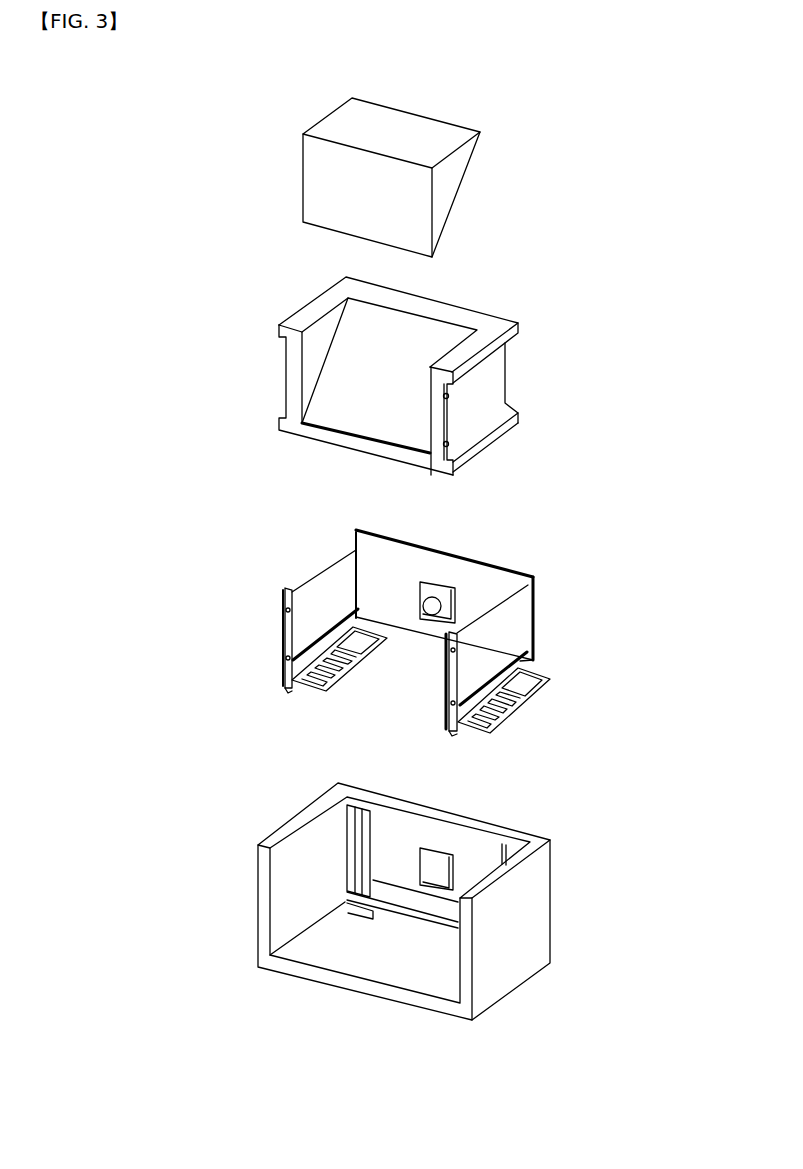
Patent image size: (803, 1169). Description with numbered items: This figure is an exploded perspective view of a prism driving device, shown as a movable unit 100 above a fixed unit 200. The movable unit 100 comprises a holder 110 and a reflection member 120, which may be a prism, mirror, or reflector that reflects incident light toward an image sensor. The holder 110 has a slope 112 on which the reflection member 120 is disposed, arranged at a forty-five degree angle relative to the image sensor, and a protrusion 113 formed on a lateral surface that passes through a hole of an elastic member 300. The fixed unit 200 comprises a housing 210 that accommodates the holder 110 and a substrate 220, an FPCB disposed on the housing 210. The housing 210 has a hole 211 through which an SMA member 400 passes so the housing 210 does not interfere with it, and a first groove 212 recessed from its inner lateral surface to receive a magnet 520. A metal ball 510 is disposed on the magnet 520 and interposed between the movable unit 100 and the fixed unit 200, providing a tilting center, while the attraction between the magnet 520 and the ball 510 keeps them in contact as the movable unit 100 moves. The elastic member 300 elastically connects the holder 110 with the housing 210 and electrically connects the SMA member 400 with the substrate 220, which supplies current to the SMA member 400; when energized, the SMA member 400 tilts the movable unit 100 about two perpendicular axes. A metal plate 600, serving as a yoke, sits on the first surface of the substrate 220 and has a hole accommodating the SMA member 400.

The movable unit 100 is at (610, 194).
The holder 110 is at (497, 372).
The slope 112 is at (358, 367).
The protrusion 113 is at (448, 396).
The reflection member 120 is at (452, 187).
The fixed unit 200 is at (665, 770).
The housing 210 is at (545, 877).
The hole 211 is at (365, 832).
The first groove 212 is at (434, 866).
The substrate 220 is at (537, 576).
The elastic member 300 is at (437, 680).
The SMA member 400 is at (287, 660).
The ball 510 is at (431, 597).
The magnet 520 is at (452, 590).
The plate 600 is at (384, 555).